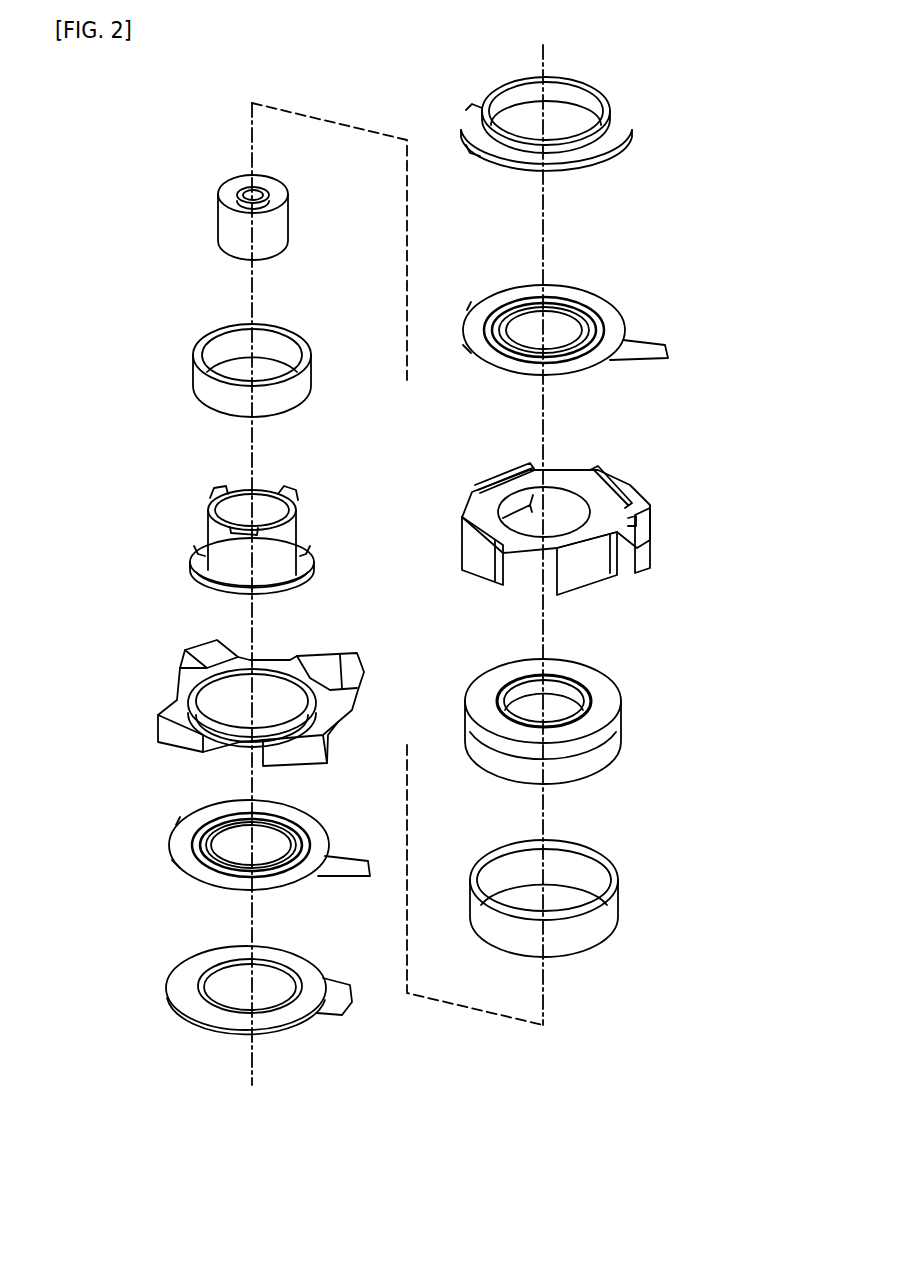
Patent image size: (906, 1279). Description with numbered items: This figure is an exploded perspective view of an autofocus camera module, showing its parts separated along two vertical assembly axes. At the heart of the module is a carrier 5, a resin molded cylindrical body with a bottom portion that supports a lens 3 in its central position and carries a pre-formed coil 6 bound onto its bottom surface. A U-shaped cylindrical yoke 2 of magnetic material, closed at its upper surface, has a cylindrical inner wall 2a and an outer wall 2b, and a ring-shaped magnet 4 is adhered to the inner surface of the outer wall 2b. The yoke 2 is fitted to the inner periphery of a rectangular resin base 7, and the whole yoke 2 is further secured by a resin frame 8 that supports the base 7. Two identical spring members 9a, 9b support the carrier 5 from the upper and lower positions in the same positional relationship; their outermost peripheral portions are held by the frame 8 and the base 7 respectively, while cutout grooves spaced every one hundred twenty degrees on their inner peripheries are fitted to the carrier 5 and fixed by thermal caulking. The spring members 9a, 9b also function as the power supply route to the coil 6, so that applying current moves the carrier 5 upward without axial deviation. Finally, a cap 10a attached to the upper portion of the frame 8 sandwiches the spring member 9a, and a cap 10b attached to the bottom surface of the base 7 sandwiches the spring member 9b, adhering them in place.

The yoke 2 is at (607, 694).
The inner wall 2a is at (575, 680).
The outer wall 2b is at (612, 742).
The lens 3 is at (226, 222).
The magnet 4 is at (605, 915).
The carrier 5 is at (215, 535).
The coil 6 is at (193, 372).
The base 7 is at (188, 684).
The frame 8 is at (605, 490).
The spring member 9a is at (616, 322).
The spring member 9b is at (190, 842).
The cap 10a is at (624, 128).
The cap 10b is at (192, 985).